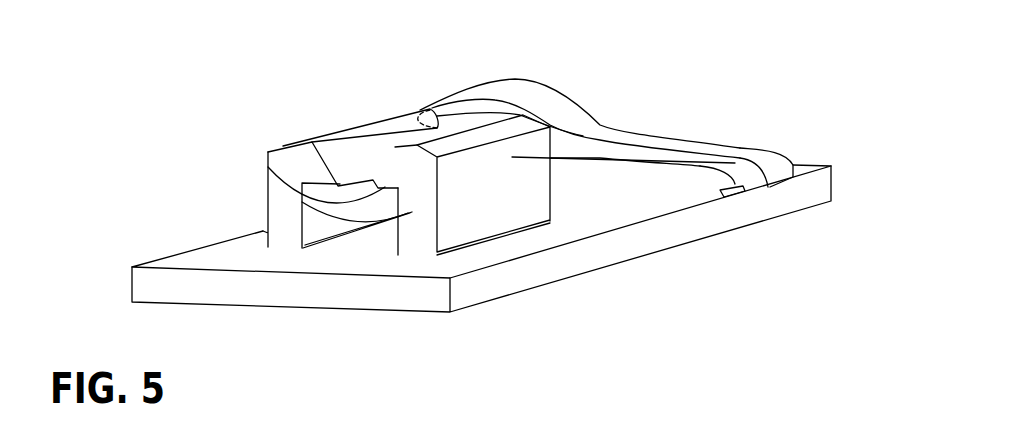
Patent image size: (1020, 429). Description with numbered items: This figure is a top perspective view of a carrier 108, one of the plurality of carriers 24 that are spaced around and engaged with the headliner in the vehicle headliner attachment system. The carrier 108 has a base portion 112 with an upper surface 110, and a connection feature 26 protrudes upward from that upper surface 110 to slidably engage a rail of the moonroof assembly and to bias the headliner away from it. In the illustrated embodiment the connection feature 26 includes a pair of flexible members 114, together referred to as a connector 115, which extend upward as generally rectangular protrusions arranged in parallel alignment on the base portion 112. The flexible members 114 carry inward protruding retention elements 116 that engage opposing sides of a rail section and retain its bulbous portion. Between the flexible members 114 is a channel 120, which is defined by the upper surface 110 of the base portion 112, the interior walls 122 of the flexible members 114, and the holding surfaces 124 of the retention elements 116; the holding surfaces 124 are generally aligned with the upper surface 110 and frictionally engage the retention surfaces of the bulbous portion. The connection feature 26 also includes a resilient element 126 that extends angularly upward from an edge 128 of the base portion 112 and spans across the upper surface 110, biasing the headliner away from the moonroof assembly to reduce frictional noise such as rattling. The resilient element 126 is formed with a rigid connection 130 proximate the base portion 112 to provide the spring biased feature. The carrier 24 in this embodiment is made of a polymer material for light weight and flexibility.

The carrier 24 is at (196, 175).
The carrier 108 is at (265, 199).
The connection feature 26 is at (389, 100).
The upper surface 110 is at (627, 213).
The base portion 112 is at (515, 280).
The flexible members 114 is at (287, 222).
The connector 115 is at (520, 204).
The inward protruding retention elements 116 is at (393, 167).
The channel 120 is at (354, 258).
The interior walls 122 is at (315, 233).
The holding surfaces 124 is at (268, 167).
The resilient element 126 is at (607, 125).
The edge 128 is at (757, 200).
The rigid connection 130 is at (770, 166).